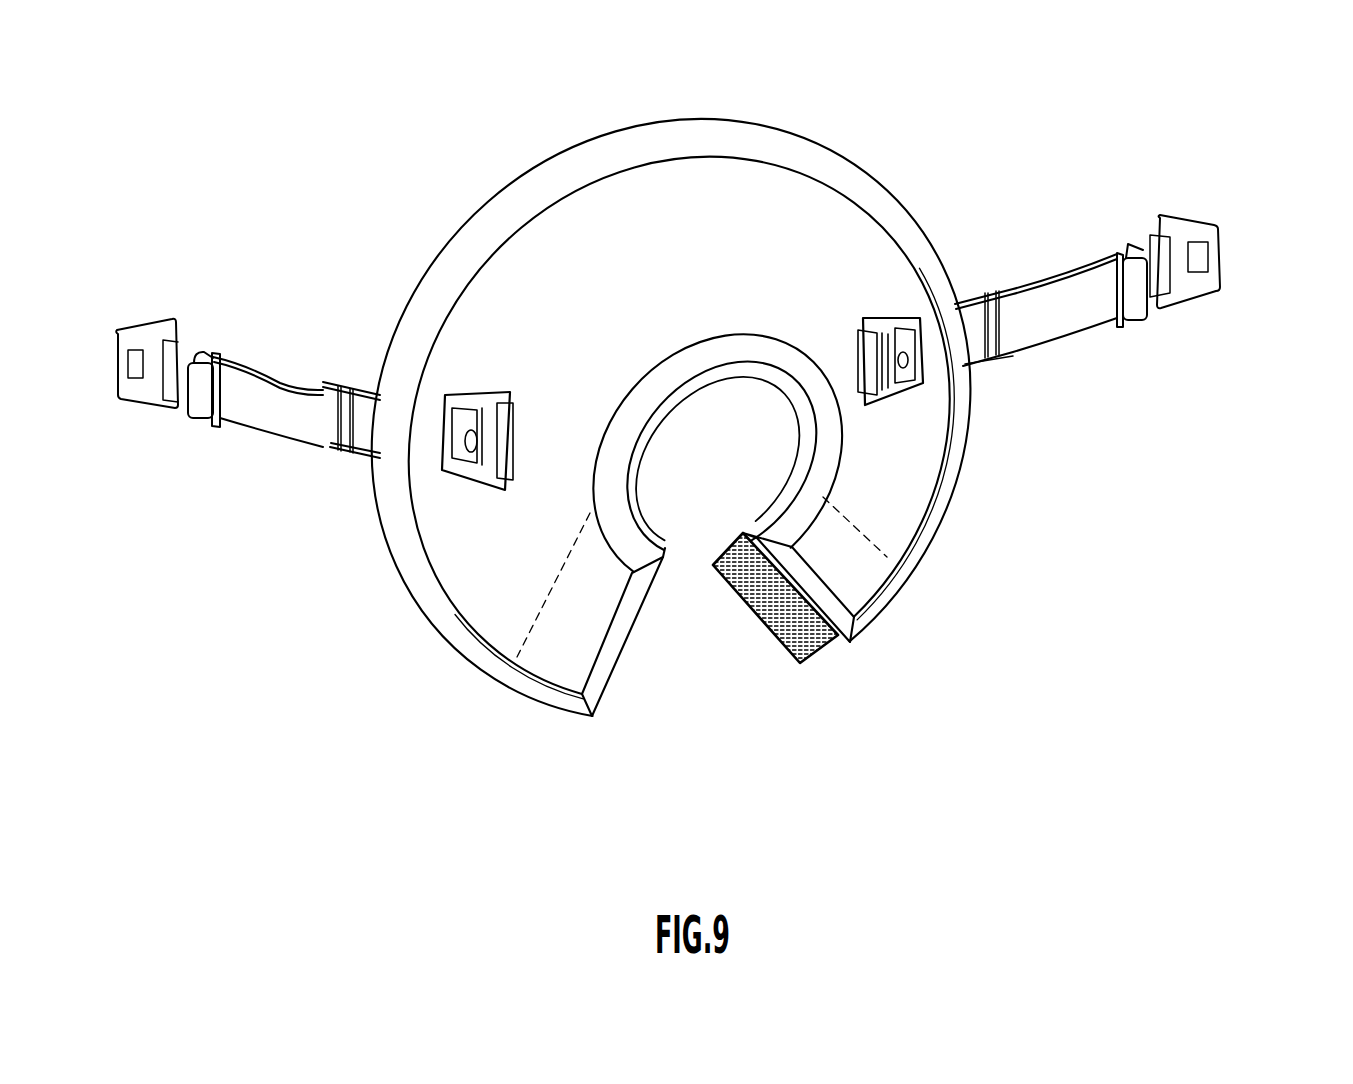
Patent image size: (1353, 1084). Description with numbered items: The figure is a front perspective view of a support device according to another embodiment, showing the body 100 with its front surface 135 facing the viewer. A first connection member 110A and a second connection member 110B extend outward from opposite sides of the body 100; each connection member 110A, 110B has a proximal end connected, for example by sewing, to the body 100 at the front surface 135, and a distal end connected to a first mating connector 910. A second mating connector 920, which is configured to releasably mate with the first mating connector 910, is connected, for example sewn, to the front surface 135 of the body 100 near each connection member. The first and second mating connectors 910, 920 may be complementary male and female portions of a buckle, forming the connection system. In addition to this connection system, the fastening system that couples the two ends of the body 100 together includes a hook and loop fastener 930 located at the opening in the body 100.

The body 100 is at (883, 192).
The front surface 135 is at (722, 272).
The first mating connector 910 is at (150, 348).
The second mating connector 920 is at (445, 423).
The hook and loop fastener 930 is at (812, 645).
The first connection member 110A is at (272, 415).
The second connection member 110B is at (1068, 317).